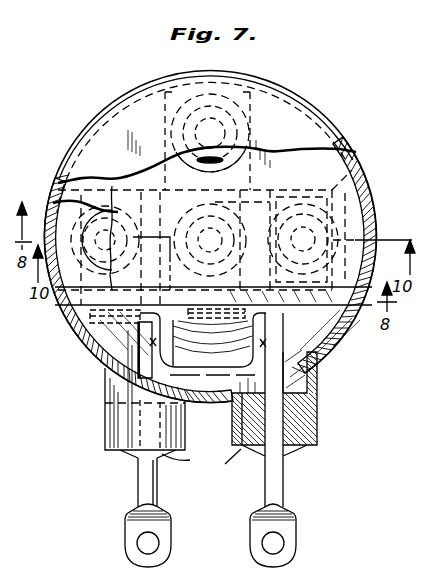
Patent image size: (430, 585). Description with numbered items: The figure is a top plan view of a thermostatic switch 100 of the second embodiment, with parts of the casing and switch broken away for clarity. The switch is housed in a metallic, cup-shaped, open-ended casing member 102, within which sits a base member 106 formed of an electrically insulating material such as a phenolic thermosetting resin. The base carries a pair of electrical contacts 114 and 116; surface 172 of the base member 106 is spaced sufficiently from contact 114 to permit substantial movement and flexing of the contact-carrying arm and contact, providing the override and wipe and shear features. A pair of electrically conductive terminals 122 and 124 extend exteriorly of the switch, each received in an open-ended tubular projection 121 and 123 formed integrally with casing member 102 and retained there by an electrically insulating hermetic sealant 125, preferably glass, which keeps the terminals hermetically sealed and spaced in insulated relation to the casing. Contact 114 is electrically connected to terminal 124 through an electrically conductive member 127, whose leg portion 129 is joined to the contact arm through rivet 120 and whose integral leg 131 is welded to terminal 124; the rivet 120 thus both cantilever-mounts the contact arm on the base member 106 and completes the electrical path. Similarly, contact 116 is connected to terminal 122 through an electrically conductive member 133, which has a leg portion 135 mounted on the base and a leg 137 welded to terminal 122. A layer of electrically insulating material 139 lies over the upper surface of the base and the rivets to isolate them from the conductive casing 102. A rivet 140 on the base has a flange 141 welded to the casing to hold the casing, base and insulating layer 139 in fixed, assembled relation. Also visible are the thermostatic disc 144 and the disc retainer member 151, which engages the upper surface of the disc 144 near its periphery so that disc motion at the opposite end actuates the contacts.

The thermostatic switch 100 is at (345, 102).
The casing member 102 is at (132, 113).
The base member 106 is at (72, 314).
The electrical contact 114 is at (363, 184).
The electrical contact 116 is at (353, 222).
The rivet 120 is at (226, 194).
The tubular projection 121 is at (105, 432).
The terminal 122 is at (142, 496).
The tubular projection 123 is at (318, 415).
The terminal 124 is at (272, 492).
The hermetic sealant 125 is at (201, 462).
The electrically conductive member 127 is at (236, 331).
The leg portion 129 is at (243, 293).
The leg 131 is at (270, 350).
The electrically conductive member 133 is at (108, 325).
The leg portion 135 is at (76, 332).
The leg 137 is at (203, 353).
The layer of electrically insulating material 139 is at (349, 149).
The rivet 140 is at (256, 124).
The flange 141 is at (105, 232).
The disc 144 is at (118, 356).
The disc retainer member 151 is at (52, 199).
The surface 172 is at (366, 162).